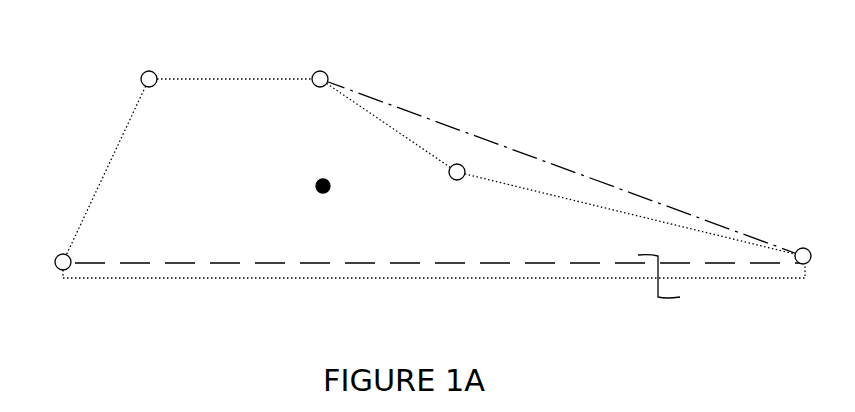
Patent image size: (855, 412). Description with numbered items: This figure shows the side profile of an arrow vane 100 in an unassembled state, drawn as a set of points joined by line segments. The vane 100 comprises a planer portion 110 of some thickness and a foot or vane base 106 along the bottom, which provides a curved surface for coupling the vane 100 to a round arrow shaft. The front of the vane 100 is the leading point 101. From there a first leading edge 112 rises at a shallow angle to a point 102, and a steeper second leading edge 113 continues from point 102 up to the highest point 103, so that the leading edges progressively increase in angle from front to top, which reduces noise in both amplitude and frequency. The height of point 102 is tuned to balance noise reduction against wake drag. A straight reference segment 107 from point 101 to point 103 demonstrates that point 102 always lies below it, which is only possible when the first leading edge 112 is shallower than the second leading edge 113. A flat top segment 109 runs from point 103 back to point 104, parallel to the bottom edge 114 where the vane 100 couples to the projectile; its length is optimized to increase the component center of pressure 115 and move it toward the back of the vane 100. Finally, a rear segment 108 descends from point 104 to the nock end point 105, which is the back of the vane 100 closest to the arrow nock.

The vane 100 is at (566, 54).
The leading point 101 is at (814, 242).
The point 102 is at (438, 187).
The highest point 103 is at (319, 62).
The point 104 is at (129, 68).
The nock end point 105 is at (43, 249).
The vane base 106 is at (638, 298).
The reference segment 107 is at (673, 200).
The segment 108 is at (106, 167).
The segment 109 is at (193, 79).
The planer portion 110 is at (211, 170).
The first leading edge 112 is at (572, 190).
The second leading edge 113 is at (384, 117).
The edge 114 is at (180, 265).
The component center of pressure 115 is at (338, 207).